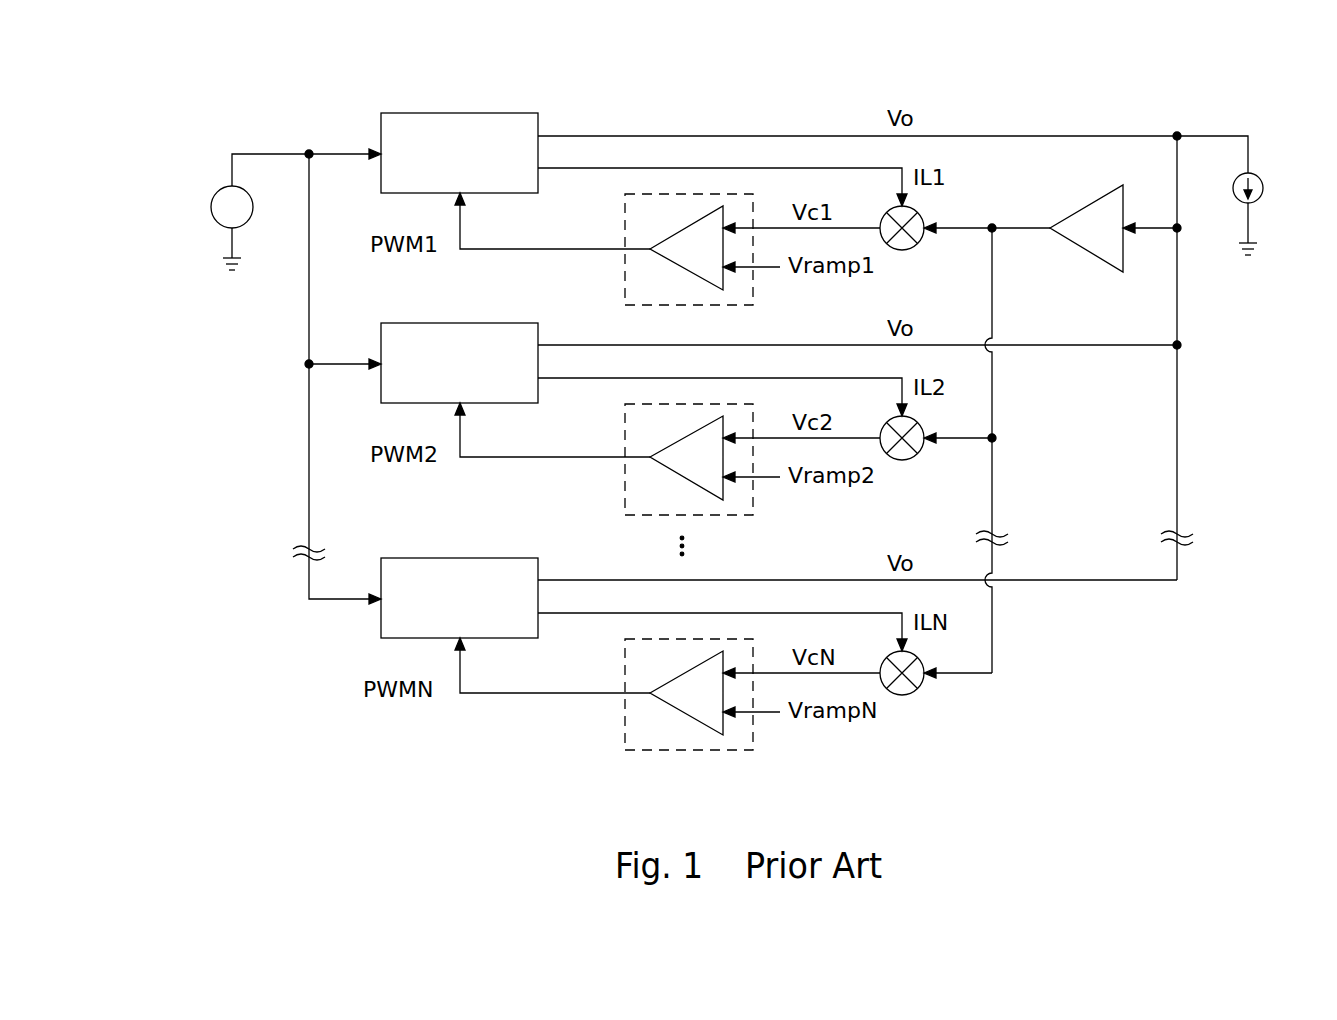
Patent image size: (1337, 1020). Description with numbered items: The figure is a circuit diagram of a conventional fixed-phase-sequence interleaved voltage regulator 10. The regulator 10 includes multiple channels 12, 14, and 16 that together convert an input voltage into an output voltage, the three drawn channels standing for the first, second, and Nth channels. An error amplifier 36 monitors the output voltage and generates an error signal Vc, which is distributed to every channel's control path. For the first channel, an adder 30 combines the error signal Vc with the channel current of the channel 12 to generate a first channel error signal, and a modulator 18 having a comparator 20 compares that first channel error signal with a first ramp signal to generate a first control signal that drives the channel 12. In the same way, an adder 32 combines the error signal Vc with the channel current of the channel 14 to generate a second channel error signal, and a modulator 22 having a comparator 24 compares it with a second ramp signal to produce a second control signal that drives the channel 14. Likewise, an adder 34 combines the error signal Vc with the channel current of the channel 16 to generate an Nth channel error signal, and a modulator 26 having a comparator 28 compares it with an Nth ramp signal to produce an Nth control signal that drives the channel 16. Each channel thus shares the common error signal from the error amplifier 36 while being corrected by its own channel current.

The fixed-phase-sequence interleaved voltage regulator 10 is at (1294, 117).
The channel 12 is at (460, 113).
The channel 14 is at (460, 323).
The channel 16 is at (460, 558).
The modulator 18 is at (625, 222).
The comparator 20 is at (686, 270).
The modulator 22 is at (625, 432).
The comparator 24 is at (686, 480).
The modulator 26 is at (625, 667).
The comparator 28 is at (686, 715).
The adder 30 is at (917, 246).
The adder 32 is at (917, 456).
The adder 34 is at (917, 691).
The error amplifier 36 is at (1087, 206).